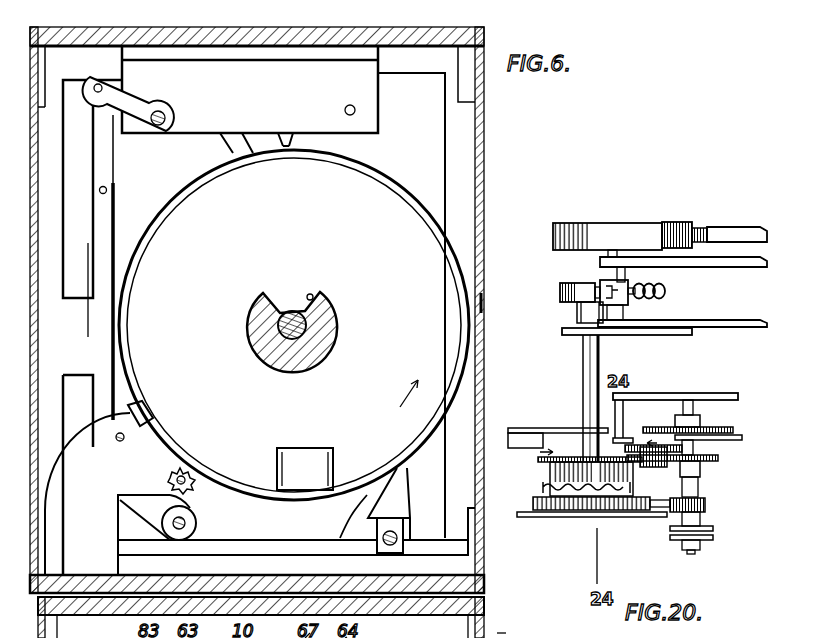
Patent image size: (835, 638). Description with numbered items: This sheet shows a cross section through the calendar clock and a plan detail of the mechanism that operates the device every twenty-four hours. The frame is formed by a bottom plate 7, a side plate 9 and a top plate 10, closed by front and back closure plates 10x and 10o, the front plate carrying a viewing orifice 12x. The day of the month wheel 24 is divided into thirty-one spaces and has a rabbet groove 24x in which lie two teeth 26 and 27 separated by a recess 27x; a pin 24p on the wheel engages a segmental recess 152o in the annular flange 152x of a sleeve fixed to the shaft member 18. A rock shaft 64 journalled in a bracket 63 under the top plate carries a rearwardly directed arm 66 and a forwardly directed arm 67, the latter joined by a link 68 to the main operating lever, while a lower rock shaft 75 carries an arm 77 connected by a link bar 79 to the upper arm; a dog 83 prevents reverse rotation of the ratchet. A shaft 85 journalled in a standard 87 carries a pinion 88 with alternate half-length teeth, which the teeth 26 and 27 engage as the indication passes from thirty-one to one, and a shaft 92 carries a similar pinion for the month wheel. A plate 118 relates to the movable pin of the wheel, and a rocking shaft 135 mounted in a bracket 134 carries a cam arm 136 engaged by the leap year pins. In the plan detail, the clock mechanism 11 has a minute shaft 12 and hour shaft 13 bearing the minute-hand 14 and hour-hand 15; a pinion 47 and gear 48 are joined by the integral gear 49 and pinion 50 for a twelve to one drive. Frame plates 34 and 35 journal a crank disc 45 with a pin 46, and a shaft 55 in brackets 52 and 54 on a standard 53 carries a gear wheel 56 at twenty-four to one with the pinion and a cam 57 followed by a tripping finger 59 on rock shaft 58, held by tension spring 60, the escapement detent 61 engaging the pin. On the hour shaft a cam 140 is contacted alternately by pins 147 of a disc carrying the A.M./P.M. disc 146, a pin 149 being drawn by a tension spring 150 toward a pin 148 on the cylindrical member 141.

In FIG. 6, the bottom plate 7 is at (272, 580).
In FIG. 6, the side plate 9 is at (460, 160).
In FIG. 6, the top plate 10 is at (292, 33).
In FIG. 6, the front closure plate 10x is at (483, 192).
In FIG. 6, the back closure plate 10o is at (35, 197).
In FIG. 6, the viewing orifice 12x is at (488, 312).
In FIG. 6, the shaft member 18 is at (305, 332).
In FIG. 6, the day of the month wheel 24 is at (331, 223).
In FIG. 6, the rabbet groove 24x is at (440, 230).
In FIG. 6, the pin 24p is at (312, 293).
In FIG. 6, the tooth 26 is at (135, 408).
In FIG. 6, the tooth 27 is at (153, 420).
In FIG. 6, the recess 27x is at (148, 415).
In FIG. 6, the bracket 63 is at (250, 89).
In FIG. 6, the rock shaft 64 is at (160, 116).
In FIG. 6, the rearwardly directed arm 66 is at (122, 93).
In FIG. 6, the forwardly directed arm 67 is at (513, 631).
In FIG. 6, the link 68 is at (250, 134).
In FIG. 6, the rock shaft 75 is at (182, 517).
In FIG. 6, the arm 77 is at (153, 508).
In FIG. 6, the link bar 79 is at (103, 313).
In FIG. 6, the dog 83 is at (291, 142).
In FIG. 6, the shaft 85 is at (187, 470).
In FIG. 6, the standard 87 is at (107, 494).
In FIG. 6, the pinion 88 is at (185, 472).
In FIG. 6, the shaft 92 is at (120, 442).
In FIG. 6, the plate 118 is at (318, 457).
In FIG. 6, the bracket 134 is at (377, 526).
In FIG. 6, the rocking shaft 135 is at (410, 527).
In FIG. 6, the cam arm 136 is at (382, 495).
In FIG. 6, the segmental recess 152o is at (273, 292).
In FIG. 6, the annular flange 152x is at (330, 312).
In FIG. 20, the clock mechanism 11 is at (738, 437).
In FIG. 20, the minute shaft 12 is at (692, 548).
In FIG. 20, the hour shaft 13 is at (706, 516).
In FIG. 20, the minute-hand 14 is at (712, 537).
In FIG. 20, the hour-hand 15 is at (710, 528).
In FIG. 20, the frame plate 34 is at (747, 321).
In FIG. 20, the frame plate 35 is at (753, 264).
In FIG. 20, the crank disc 45 is at (748, 232).
In FIG. 20, the pin 46 is at (713, 216).
In FIG. 20, the pinion 47 is at (733, 459).
In FIG. 20, the gear 48 is at (710, 461).
In FIG. 20, the gear 49 is at (631, 446).
In FIG. 20, the pinion 50 is at (650, 464).
In FIG. 20, the bracket 52 is at (548, 428).
In FIG. 20, the standard 53 is at (518, 449).
In FIG. 20, the bracket 54 is at (578, 337).
In FIG. 20, the shaft 55 is at (590, 374).
In FIG. 20, the gear wheel 56 is at (558, 457).
In FIG. 20, the cam 57 is at (561, 292).
In FIG. 20, the rock shaft 58 is at (618, 248).
In FIG. 20, the tripping finger 59 is at (623, 278).
In FIG. 20, the tension spring 60 is at (664, 289).
In FIG. 20, the escapement detent 61 is at (588, 233).
In FIG. 20, the cam 140 is at (705, 502).
In FIG. 20, the cylindrical member 141 is at (593, 497).
In FIG. 20, the disc 146 is at (528, 519).
In FIG. 20, the pin 147 is at (664, 517).
In FIG. 20, the pin 148 is at (630, 510).
In FIG. 20, the pin 149 is at (537, 494).
In FIG. 20, the tension spring 150 is at (610, 488).